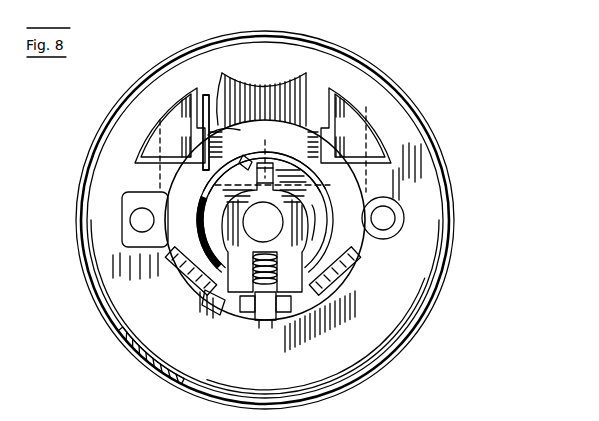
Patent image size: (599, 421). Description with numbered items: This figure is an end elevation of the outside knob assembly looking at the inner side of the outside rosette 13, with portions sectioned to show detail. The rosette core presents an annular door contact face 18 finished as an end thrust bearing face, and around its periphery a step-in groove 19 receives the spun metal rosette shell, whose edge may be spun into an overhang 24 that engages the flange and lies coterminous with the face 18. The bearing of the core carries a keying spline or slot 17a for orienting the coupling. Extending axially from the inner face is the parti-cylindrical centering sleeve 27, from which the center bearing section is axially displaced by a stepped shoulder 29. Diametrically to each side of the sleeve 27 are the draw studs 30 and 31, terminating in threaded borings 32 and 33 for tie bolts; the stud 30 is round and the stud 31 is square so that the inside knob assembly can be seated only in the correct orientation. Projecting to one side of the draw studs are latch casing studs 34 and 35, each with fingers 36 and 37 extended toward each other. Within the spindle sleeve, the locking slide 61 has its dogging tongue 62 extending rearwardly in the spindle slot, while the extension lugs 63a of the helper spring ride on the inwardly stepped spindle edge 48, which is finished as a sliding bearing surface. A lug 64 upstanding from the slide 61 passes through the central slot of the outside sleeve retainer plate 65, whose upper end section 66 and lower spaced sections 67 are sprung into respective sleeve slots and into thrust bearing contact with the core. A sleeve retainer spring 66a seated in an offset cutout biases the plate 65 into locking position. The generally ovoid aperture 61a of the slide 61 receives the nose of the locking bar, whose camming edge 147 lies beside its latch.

The outside rosette 13 is at (414, 81).
The keying spline or slot 17a is at (278, 332).
The door contact face 18 is at (203, 360).
The step-in groove 19 is at (144, 350).
The overhang 24 is at (117, 320).
The centering sleeve 27 is at (341, 274).
The stepped shoulder 29 is at (220, 301).
The draw stud 30 is at (402, 208).
The draw stud 31 is at (123, 202).
The threaded boring 32 is at (394, 221).
The threaded boring 33 is at (137, 223).
The latch casing stud 34 is at (356, 135).
The latch casing stud 35 is at (190, 139).
The finger 36 is at (318, 96).
The finger 37 is at (206, 96).
The inwardly stepped edge 48 is at (170, 271).
The locking slide 61 is at (295, 248).
The ovoid aperture 61a is at (270, 231).
The dogging tongue 62 is at (268, 312).
The extension lug 63a is at (142, 188).
The lug 64 is at (280, 160).
The outside sleeve retainer plate 65 is at (312, 210).
The upper end section 66 is at (287, 129).
The sleeve retainer spring 66a is at (222, 80).
The lower spaced section 67 is at (241, 318).
The camming edge 147 is at (249, 153).